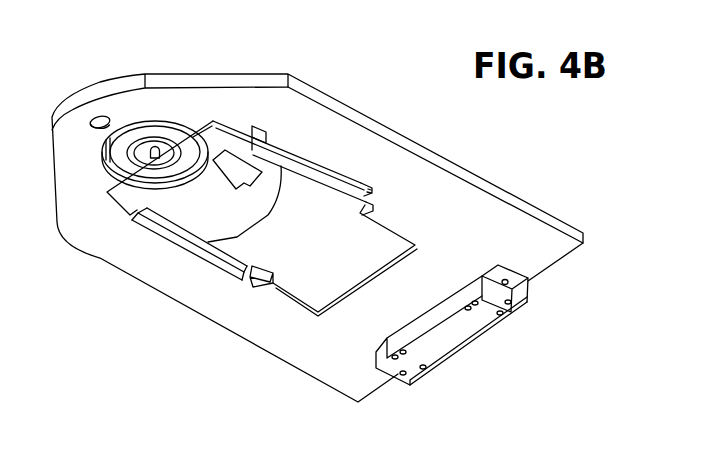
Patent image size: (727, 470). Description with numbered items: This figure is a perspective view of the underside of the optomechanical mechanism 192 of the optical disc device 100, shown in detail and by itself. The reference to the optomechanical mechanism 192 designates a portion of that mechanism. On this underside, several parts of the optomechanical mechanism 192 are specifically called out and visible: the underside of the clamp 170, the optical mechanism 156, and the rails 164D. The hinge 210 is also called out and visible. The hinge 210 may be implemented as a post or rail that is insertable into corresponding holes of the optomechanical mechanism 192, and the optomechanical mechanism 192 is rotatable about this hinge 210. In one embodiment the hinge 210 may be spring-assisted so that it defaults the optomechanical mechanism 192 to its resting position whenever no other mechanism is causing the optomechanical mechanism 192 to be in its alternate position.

The optical disc device 100 is at (138, 345).
The optical mechanism 156 is at (215, 138).
The rails 164D is at (328, 187).
The clamp 170 is at (187, 148).
The optomechanical mechanism 192 is at (408, 170).
The hinge 210 is at (508, 283).